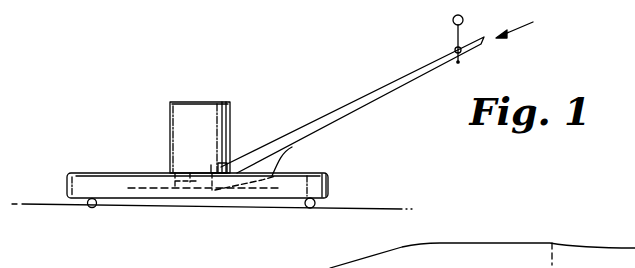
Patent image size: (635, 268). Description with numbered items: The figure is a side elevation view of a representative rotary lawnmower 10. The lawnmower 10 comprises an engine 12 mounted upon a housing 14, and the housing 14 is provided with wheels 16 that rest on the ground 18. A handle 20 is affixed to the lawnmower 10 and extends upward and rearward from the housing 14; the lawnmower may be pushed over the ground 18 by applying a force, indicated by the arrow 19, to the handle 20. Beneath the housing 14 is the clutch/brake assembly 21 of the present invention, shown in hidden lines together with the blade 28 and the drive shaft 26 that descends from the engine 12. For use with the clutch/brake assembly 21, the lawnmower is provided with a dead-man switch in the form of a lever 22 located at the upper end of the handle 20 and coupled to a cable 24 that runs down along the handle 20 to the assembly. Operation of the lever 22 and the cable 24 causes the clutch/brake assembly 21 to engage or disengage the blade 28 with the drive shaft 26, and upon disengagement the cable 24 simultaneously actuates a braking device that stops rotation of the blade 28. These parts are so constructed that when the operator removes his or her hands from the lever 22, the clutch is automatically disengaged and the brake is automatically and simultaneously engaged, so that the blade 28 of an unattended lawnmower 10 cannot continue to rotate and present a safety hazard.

The rotary lawnmower 10 is at (168, 133).
The engine 12 is at (203, 105).
The housing 14 is at (115, 178).
The wheels 16 is at (88, 208).
The ground 18 is at (368, 210).
The arrow 19 is at (515, 30).
The handle 20 is at (377, 92).
The clutch/brake assembly 21 is at (465, 267).
The lever 22 is at (457, 33).
The cable 24 is at (283, 158).
The drive shaft 26 is at (224, 165).
The blade 28 is at (138, 189).